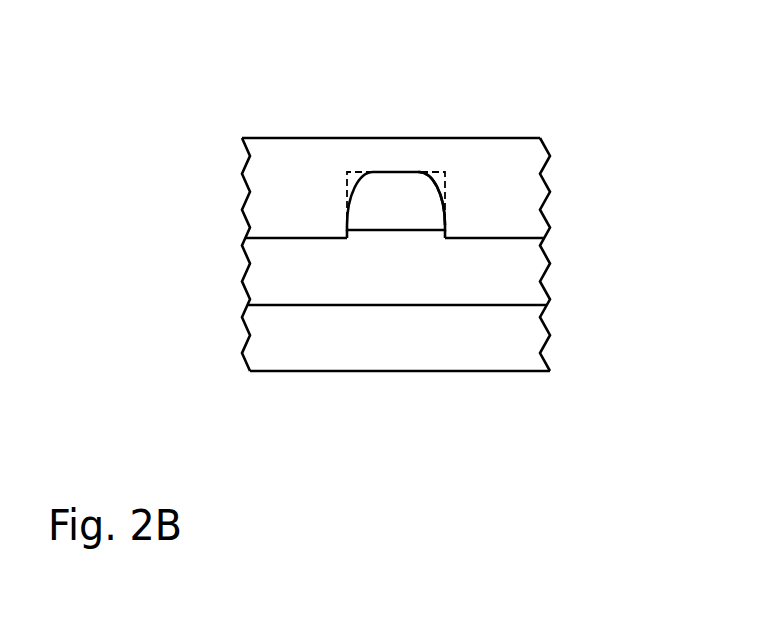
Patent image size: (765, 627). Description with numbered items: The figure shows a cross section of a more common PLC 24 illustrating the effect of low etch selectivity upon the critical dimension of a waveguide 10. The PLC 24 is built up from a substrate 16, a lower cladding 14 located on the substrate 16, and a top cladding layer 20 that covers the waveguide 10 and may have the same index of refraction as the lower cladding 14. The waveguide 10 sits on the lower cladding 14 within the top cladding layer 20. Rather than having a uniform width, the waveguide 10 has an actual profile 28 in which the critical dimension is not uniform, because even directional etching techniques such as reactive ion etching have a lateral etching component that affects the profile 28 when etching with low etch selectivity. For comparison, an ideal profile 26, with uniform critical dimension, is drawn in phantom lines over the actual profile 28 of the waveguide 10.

The waveguide 10 is at (395, 203).
The lower cladding 14 is at (517, 279).
The substrate 16 is at (298, 327).
The top cladding layer 20 is at (290, 196).
The PLC 24 is at (258, 114).
The ideal profile 26 is at (345, 190).
The actual profile 28 is at (435, 188).